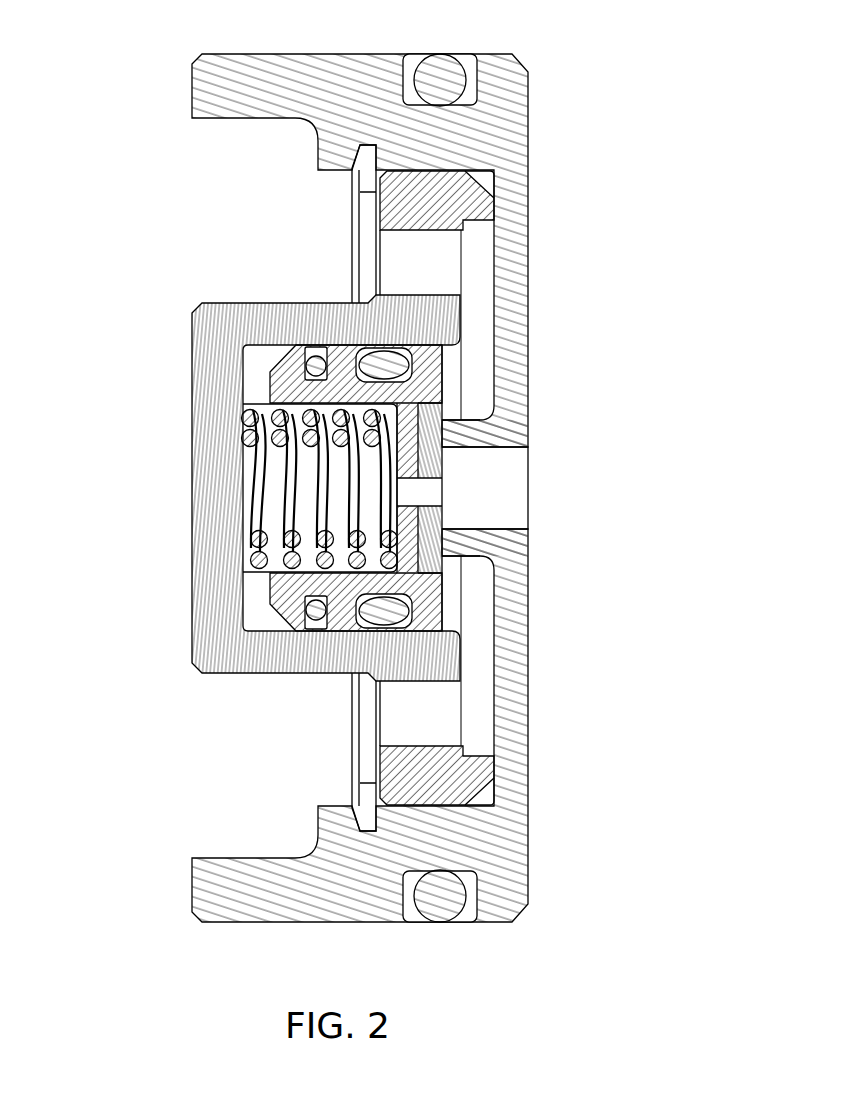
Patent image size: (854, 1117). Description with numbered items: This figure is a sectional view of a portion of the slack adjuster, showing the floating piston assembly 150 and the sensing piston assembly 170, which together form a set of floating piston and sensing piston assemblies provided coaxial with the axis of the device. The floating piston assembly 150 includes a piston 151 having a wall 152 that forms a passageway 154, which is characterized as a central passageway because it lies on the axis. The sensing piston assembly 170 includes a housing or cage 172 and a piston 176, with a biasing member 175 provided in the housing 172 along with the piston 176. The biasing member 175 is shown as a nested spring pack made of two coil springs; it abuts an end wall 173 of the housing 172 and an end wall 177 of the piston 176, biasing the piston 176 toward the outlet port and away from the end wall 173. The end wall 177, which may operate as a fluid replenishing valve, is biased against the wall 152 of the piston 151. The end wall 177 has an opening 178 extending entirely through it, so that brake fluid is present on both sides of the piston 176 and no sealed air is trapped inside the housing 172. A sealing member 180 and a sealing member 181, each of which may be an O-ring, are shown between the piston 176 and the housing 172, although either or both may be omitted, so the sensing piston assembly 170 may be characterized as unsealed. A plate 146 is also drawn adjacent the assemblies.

The plate 146 is at (352, 770).
The floating piston assembly 150 is at (374, 462).
The piston 151 is at (529, 112).
The wall 152 is at (461, 432).
The passageway 154 is at (508, 475).
The sensing piston assembly 170 is at (362, 481).
The housing 172 is at (192, 563).
The end wall 173 is at (243, 607).
The biasing member 175 is at (281, 460).
The piston 176 is at (436, 602).
The end wall 177 is at (444, 383).
The opening 178 is at (436, 492).
The sealing member 180 is at (317, 612).
The sealing member 181 is at (372, 357).